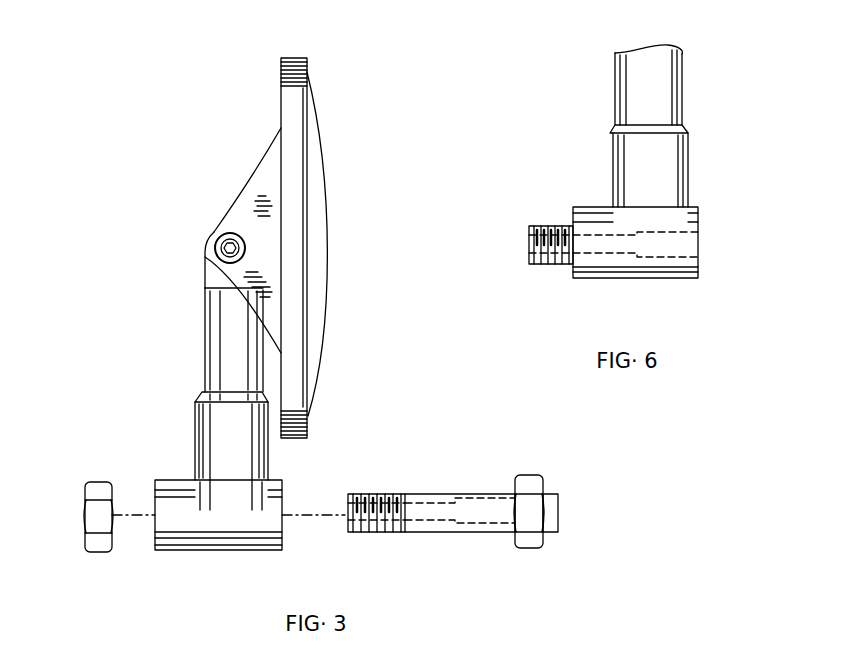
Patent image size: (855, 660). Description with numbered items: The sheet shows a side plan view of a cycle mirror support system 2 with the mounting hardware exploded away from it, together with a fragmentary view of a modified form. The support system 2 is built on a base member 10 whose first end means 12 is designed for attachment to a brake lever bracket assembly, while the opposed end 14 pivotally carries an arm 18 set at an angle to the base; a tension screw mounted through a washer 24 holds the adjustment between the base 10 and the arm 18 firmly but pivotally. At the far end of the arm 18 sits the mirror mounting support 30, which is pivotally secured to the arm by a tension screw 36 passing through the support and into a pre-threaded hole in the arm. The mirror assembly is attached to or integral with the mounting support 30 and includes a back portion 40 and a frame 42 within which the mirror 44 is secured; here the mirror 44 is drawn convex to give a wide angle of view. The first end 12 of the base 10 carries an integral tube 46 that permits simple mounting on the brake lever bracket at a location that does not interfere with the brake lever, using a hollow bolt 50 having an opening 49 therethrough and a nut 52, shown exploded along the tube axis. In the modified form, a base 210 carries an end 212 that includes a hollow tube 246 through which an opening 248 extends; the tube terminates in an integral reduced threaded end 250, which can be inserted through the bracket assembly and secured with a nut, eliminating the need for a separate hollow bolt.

In FIG. 3, the mirror support system 2 is at (150, 376).
In FIG. 3, the base member 10 is at (217, 383).
In FIG. 3, the first end means 12 is at (183, 554).
In FIG. 3, the end 14 is at (205, 328).
In FIG. 3, the arm 18 is at (210, 272).
In FIG. 3, the washer 24 is at (207, 287).
In FIG. 3, the mirror mounting support 30 is at (256, 193).
In FIG. 3, the tension screw 36 is at (217, 238).
In FIG. 3, the back portion 40 is at (281, 90).
In FIG. 3, the frame 42 is at (290, 58).
In FIG. 3, the mirror 44 is at (315, 160).
In FIG. 3, the tube 46 is at (243, 536).
In FIG. 3, the opening 49 is at (560, 510).
In FIG. 3, the hollow bolt 50 is at (415, 498).
In FIG. 3, the nut 52 is at (95, 482).
In FIG. 6, the base 210 is at (668, 88).
In FIG. 6, the end 212 is at (673, 281).
In FIG. 6, the hollow tube 246 is at (605, 268).
In FIG. 6, the opening 248 is at (700, 244).
In FIG. 6, the reduced threaded end 250 is at (541, 226).